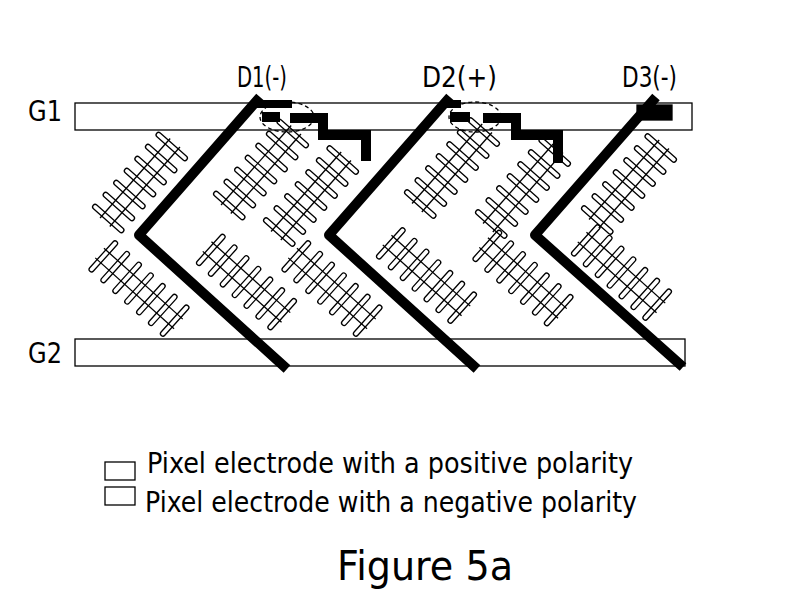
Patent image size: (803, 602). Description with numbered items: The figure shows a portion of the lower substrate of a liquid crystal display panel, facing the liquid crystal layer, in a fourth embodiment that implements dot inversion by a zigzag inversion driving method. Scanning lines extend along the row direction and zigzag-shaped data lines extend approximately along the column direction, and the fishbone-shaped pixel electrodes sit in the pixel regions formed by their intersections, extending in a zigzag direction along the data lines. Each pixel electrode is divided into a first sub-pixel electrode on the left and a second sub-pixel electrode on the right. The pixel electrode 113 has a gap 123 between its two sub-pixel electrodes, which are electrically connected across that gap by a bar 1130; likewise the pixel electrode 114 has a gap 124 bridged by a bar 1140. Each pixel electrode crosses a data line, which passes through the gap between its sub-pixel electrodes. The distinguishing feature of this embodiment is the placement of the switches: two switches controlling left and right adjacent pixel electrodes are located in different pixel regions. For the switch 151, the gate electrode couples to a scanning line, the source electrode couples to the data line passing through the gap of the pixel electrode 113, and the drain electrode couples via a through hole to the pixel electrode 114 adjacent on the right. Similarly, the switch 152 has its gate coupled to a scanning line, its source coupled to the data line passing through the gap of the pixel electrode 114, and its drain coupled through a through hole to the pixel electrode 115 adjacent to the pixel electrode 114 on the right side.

The pixel electrode 113 is at (150, 276).
The bar 1130 is at (180, 318).
The pixel electrode 114 is at (392, 277).
The bar 1140 is at (413, 223).
The pixel electrode 115 is at (667, 320).
The gap 123 is at (205, 135).
The gap 124 is at (392, 140).
The switch 151 is at (288, 103).
The switch 152 is at (480, 102).